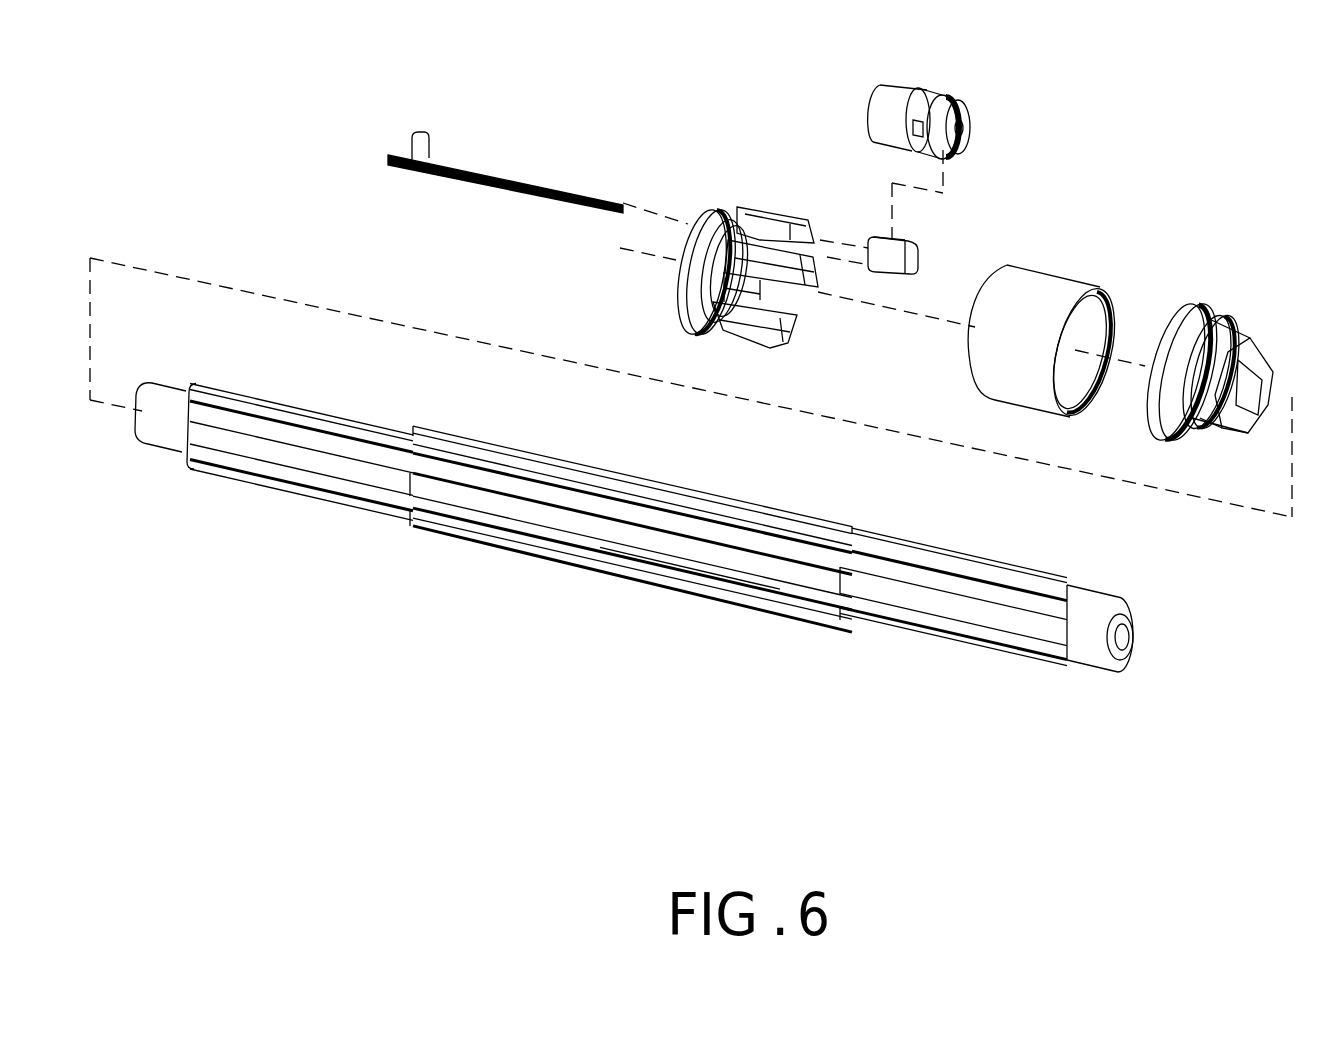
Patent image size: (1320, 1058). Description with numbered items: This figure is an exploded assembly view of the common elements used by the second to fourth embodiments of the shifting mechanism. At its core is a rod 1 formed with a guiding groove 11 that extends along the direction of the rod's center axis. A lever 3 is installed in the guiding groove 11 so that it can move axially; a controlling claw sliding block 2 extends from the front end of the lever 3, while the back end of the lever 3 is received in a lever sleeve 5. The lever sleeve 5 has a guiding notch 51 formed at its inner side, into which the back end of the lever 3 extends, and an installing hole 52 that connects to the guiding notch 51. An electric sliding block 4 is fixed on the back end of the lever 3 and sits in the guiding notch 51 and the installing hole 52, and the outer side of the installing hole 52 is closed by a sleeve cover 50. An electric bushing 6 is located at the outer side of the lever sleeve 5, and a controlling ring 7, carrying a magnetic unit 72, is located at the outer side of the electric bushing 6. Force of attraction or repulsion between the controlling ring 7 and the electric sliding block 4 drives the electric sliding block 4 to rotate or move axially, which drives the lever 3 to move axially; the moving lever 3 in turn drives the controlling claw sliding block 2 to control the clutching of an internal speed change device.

The rod 1 is at (500, 547).
The guiding groove 11 is at (780, 510).
The controlling claw sliding block 2 is at (421, 131).
The lever 3 is at (522, 180).
The electric sliding block 4 is at (915, 247).
The lever sleeve 5 is at (776, 196).
The guiding notch 51 is at (807, 226).
The installing hole 52 is at (773, 213).
The electric bushing 6 is at (1073, 275).
The controlling ring 7 is at (947, 88).
The gear teeth 72 is at (955, 100).
The sleeve cover 50 is at (1240, 334).